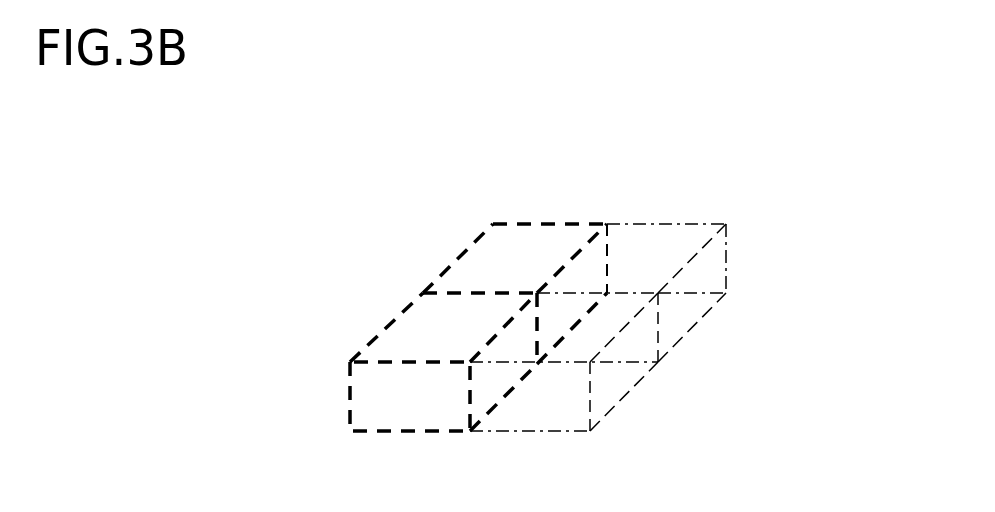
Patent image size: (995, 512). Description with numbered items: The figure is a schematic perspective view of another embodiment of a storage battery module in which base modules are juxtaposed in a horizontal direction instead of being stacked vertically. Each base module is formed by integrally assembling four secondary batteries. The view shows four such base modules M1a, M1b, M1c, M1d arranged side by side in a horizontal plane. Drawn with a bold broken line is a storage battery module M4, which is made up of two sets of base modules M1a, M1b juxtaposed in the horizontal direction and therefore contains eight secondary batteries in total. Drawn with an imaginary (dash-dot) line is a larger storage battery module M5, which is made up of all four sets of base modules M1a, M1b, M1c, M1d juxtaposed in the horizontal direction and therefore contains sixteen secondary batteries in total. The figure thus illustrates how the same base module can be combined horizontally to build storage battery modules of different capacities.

The base module M1a is at (413, 332).
The base module M1b is at (485, 259).
The base module M1c is at (605, 392).
The base module M1d is at (673, 318).
The storage battery module M4 is at (525, 238).
The storage battery module M5 is at (652, 237).